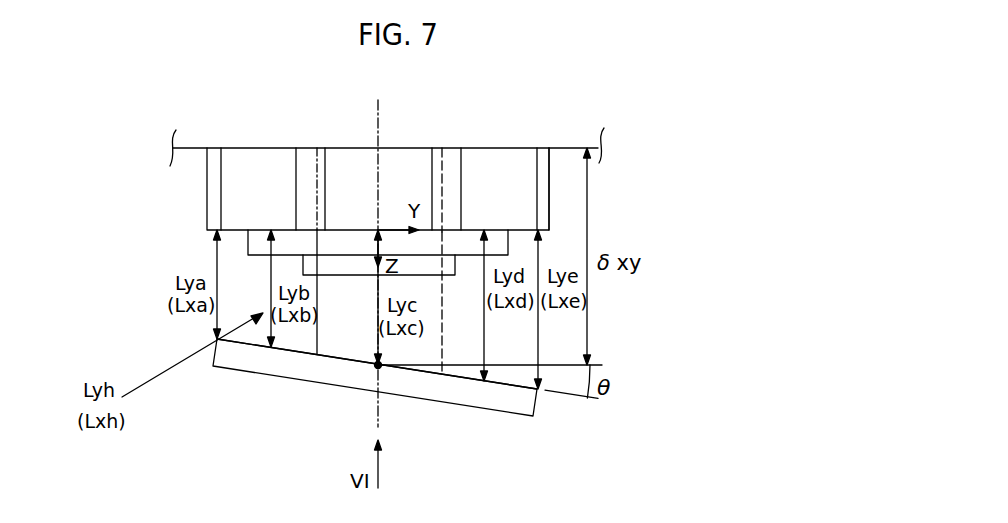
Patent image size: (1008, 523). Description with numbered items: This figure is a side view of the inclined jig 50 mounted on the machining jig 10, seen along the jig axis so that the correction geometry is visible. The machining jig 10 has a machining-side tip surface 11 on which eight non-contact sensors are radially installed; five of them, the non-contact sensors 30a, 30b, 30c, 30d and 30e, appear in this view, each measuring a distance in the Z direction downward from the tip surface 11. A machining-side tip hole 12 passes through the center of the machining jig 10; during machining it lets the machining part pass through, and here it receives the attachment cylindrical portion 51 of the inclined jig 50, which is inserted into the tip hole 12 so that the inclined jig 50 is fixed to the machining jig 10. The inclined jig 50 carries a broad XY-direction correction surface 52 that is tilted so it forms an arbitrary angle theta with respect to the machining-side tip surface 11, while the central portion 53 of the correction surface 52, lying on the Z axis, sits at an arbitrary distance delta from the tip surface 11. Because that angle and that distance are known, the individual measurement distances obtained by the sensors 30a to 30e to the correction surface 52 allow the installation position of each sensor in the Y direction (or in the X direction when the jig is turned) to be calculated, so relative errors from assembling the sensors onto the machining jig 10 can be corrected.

The machining jig 10 is at (592, 121).
The machining-side tip surface 11 is at (570, 148).
The machining-side tip hole 12 is at (442, 192).
The non-contact sensor 30a is at (213, 160).
The non-contact sensor 30b is at (272, 168).
The non-contact sensor 30c is at (352, 168).
The non-contact sensor 30d is at (500, 170).
The non-contact sensor 30e is at (545, 170).
The inclined jig 50 is at (547, 419).
The attachment cylindrical portion 51 is at (442, 336).
The XY-direction correction surface 52 is at (462, 378).
The central portion 53 is at (378, 366).